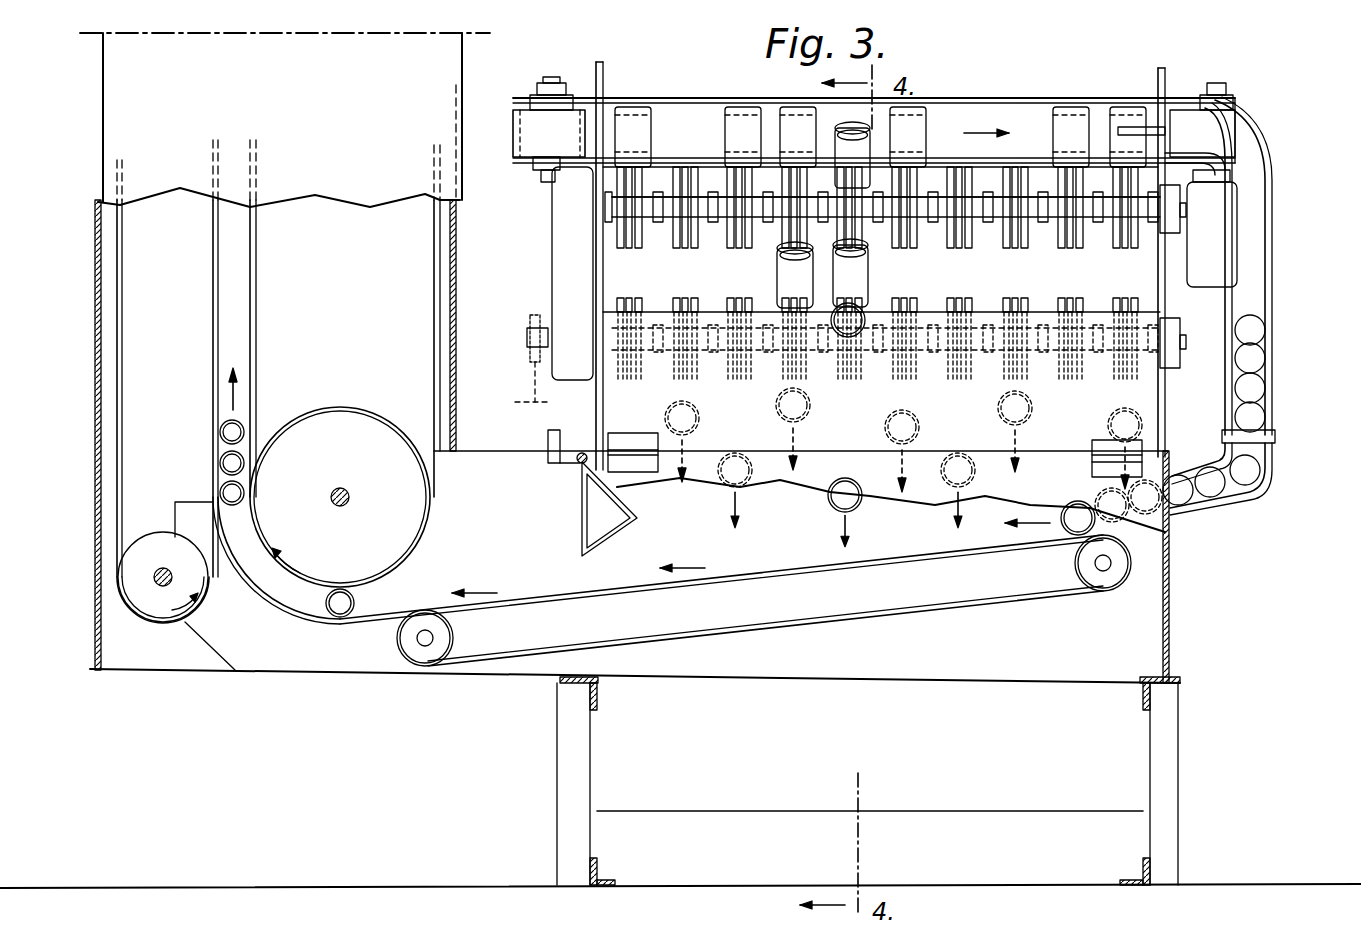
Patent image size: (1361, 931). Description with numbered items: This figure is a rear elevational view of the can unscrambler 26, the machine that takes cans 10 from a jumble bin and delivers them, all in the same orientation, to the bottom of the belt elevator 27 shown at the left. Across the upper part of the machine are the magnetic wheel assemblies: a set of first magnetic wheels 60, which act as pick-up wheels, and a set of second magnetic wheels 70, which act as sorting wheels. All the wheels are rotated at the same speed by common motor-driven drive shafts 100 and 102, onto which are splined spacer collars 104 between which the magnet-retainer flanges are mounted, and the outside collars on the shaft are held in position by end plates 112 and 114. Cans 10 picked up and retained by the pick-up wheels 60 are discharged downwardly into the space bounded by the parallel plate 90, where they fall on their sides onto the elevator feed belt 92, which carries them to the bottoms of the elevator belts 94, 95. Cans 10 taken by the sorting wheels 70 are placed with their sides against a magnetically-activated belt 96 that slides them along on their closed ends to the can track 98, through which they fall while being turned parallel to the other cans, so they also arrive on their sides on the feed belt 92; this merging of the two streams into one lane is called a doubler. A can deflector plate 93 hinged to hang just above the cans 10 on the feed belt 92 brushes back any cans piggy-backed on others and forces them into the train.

The can 10 is at (790, 120).
The can unscrambler 26 is at (874, 221).
The belt elevator 27 is at (103, 150).
The first magnetic wheels 60 is at (955, 303).
The second magnetic wheels 70 is at (783, 248).
The parallel plate 90 is at (603, 402).
The elevator feed belt 92 is at (762, 575).
The can deflector plate 93 is at (580, 503).
The elevator belt 94 is at (213, 383).
The elevator belt 95 is at (258, 352).
The magnetically-activated belt 96 is at (667, 118).
The can track 98 is at (1275, 318).
The drive shaft 100 is at (1174, 352).
The drive shaft 102 is at (1188, 214).
The spacer collars 104 is at (712, 222).
The end plate 112 is at (596, 65).
The end plate 114 is at (1166, 75).